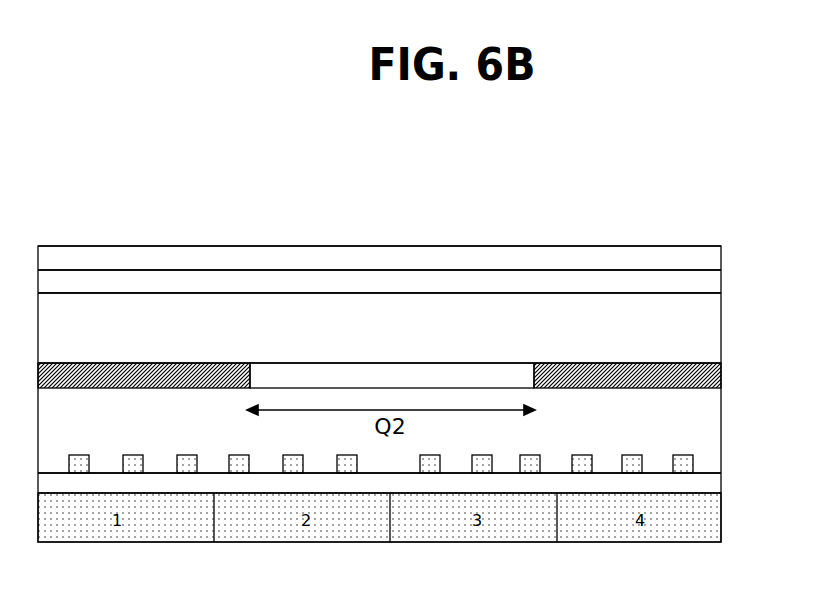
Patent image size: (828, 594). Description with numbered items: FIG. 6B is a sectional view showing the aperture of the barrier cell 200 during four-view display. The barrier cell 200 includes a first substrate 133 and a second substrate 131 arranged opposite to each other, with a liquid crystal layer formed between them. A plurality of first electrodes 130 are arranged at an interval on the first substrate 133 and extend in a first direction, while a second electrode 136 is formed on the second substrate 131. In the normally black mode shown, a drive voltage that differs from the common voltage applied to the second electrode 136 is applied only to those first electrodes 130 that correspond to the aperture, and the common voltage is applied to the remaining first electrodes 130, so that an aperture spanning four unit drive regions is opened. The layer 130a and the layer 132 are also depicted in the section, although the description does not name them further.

The barrier cell 200 is at (475, 232).
The second substrate 131 is at (721, 258).
The second electrode 136 is at (721, 284).
The first substrate 133 is at (721, 314).
The light blocking layer 130a is at (721, 373).
The first electrodes 130 is at (690, 462).
The substrate 132 is at (721, 485).